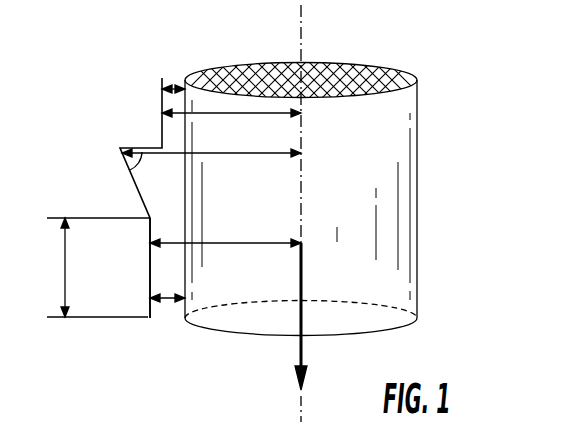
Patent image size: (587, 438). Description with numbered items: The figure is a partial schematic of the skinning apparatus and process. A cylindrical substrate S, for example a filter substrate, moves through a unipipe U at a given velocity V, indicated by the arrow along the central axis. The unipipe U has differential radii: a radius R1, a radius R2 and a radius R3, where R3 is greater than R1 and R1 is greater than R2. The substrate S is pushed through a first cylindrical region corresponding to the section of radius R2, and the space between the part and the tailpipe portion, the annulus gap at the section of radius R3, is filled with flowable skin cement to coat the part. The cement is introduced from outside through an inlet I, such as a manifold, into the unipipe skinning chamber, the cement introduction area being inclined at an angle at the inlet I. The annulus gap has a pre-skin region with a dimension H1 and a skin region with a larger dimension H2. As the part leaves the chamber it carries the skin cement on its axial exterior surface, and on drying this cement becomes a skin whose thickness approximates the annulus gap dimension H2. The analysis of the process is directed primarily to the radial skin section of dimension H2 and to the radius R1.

The substrate S is at (417, 145).
The inlet I is at (122, 151).
The unipipe U is at (150, 233).
The pre-skin region dimension H1 is at (171, 69).
The skin region dimension H2 is at (167, 321).
The length of vertical section L is at (98, 267).
The first radius R1 is at (270, 244).
The second radius R2 is at (268, 114).
The third radius R3 is at (270, 154).
The velocity V is at (318, 213).